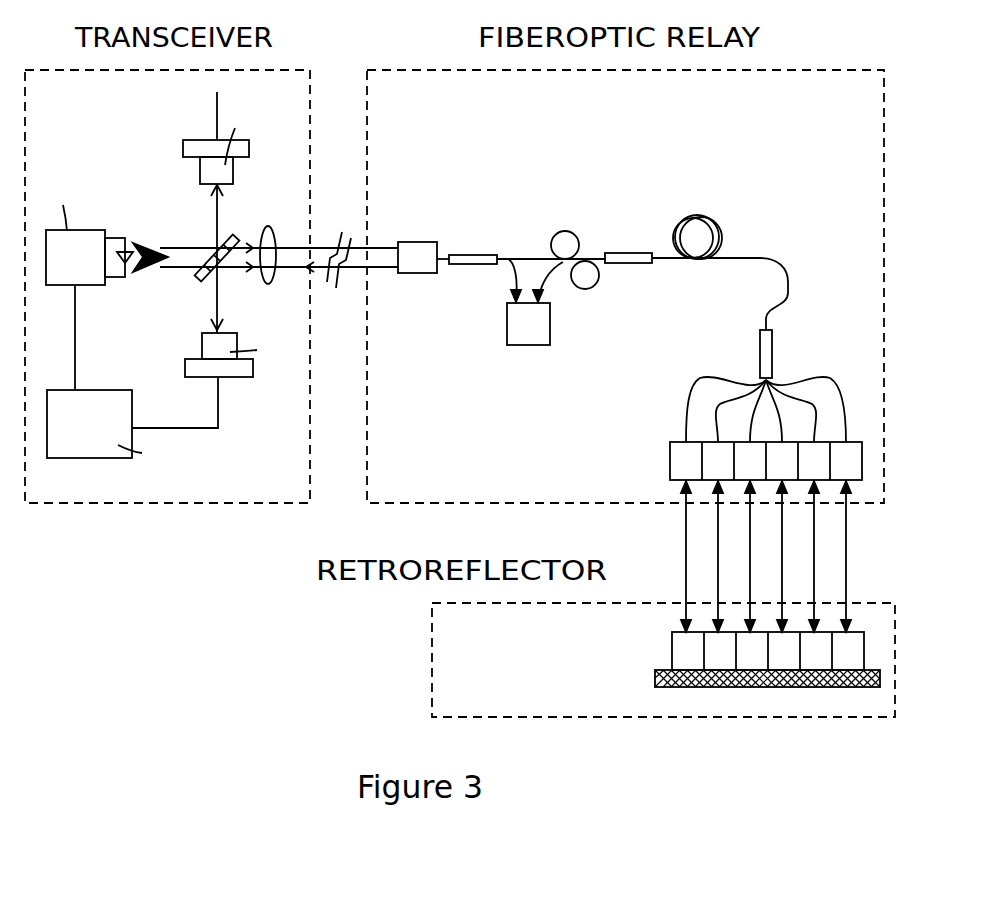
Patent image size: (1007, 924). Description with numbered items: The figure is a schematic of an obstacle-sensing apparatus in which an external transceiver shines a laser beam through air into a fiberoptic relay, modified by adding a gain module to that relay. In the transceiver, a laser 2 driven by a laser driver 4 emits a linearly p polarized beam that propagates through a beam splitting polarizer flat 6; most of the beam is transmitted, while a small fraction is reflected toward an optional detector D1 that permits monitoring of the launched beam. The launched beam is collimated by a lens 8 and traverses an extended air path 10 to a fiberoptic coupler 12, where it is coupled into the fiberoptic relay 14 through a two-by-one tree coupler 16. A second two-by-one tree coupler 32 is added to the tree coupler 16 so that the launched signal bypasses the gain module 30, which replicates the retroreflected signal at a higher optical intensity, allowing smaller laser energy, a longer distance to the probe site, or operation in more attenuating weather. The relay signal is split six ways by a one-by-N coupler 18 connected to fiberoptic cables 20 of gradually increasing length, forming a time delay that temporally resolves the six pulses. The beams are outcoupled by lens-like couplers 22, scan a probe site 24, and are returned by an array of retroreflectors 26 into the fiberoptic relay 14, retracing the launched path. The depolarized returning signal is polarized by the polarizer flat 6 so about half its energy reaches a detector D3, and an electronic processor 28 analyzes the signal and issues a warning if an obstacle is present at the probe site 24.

The laser 2 is at (136, 237).
The laser driver 4 is at (76, 218).
The beam splitting polarizer flat 6 is at (217, 302).
The lens 8 is at (267, 239).
The extended air path 10 is at (343, 245).
The fiberoptic coupler 12 is at (420, 248).
The fiberoptic relay 14 is at (763, 258).
The 2×1 tree coupler 16 is at (622, 256).
The 1×N coupler 18 is at (824, 353).
The fiberoptic cables 20 is at (738, 409).
The lens-like couplers 22 is at (675, 455).
The probe site 24 is at (709, 556).
The array of retroreflectors 26 is at (677, 652).
The electronic processor 28 is at (171, 440).
The gain module 30 is at (543, 318).
The 2×1 tree coupler 32 is at (465, 262).
The optional detector D1 is at (254, 134).
The detector D3 is at (273, 346).